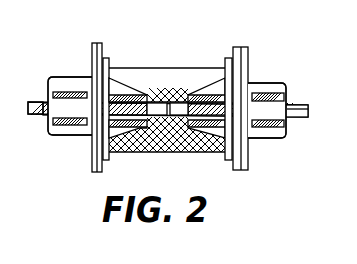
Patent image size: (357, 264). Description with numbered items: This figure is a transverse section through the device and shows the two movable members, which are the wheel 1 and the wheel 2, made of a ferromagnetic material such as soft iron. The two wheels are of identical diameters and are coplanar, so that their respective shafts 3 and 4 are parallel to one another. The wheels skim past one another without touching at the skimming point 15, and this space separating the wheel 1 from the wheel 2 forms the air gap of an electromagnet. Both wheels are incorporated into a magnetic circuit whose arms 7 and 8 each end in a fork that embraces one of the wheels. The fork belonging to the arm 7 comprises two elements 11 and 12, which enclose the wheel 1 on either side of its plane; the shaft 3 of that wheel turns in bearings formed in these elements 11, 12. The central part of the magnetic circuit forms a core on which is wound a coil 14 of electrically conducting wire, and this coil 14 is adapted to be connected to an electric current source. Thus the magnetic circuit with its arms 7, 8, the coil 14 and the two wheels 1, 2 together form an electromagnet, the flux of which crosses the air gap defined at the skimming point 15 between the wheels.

The wheel 1 is at (308, 112).
The wheel 2 is at (40, 115).
The shaft 3 is at (248, 50).
The shaft 4 is at (92, 50).
The arm of the magnetic circuit 7 is at (272, 83).
The arm of the magnetic circuit 8 is at (53, 77).
The fork element 11 is at (286, 97).
The fork element 12 is at (286, 124).
The coil 14 is at (197, 68).
The skimming point 15 is at (168, 92).